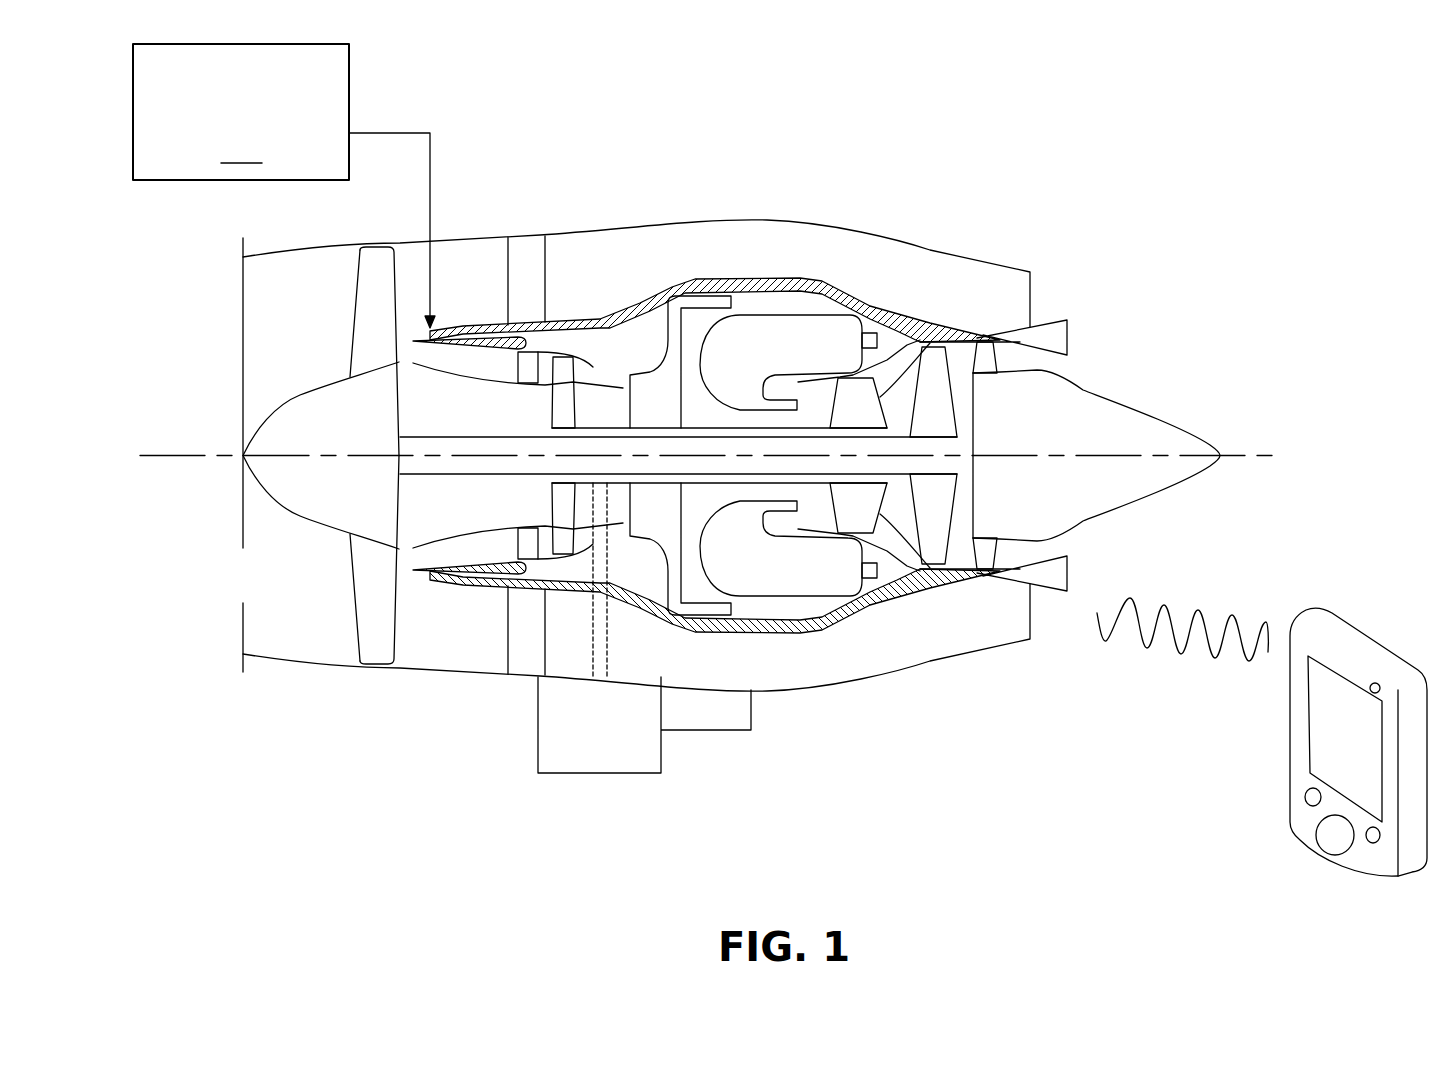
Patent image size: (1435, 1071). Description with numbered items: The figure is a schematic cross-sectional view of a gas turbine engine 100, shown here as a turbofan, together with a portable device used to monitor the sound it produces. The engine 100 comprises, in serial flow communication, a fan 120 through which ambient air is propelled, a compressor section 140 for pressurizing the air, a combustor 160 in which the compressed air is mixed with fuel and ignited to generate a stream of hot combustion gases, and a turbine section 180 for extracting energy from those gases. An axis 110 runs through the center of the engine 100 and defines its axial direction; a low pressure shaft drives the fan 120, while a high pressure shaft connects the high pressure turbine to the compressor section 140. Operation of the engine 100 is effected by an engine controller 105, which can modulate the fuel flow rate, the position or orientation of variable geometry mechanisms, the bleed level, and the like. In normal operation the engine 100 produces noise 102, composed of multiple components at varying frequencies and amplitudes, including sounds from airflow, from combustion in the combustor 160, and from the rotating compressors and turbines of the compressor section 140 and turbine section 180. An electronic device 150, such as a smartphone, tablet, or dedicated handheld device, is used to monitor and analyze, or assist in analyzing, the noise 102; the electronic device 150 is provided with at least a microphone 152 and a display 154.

The gas turbine engine 100 is at (914, 178).
The noise 102 is at (1130, 684).
The engine controller 105 is at (284, 186).
The axis 110 is at (203, 445).
The fan 120 is at (372, 587).
The compressor section 140 is at (593, 365).
The electronic device 150 is at (1288, 808).
The microphone 152 is at (1378, 683).
The display 154 is at (1358, 743).
The combustor 160 is at (780, 332).
The turbine section 180 is at (895, 515).